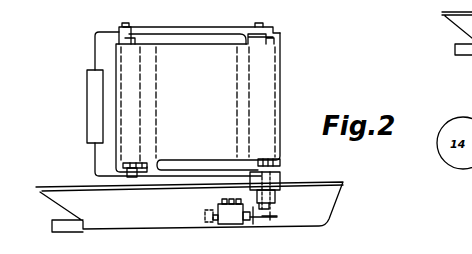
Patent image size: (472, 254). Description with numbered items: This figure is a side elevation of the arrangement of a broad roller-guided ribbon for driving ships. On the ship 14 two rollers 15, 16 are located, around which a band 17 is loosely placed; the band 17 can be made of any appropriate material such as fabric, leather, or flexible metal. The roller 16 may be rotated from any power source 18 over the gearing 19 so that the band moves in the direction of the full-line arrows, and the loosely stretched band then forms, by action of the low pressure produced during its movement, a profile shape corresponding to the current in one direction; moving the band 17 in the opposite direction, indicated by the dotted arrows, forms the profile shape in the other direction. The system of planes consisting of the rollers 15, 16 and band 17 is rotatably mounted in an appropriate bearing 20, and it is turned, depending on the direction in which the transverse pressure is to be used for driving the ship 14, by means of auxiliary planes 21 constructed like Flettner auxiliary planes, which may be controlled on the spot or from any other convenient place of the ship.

The ship 14 is at (138, 223).
The roller 15 is at (122, 166).
The roller 16 is at (281, 163).
The band 17 is at (181, 50).
The power source 18 is at (245, 214).
The gearing 19 is at (268, 218).
The bearing 20 is at (281, 176).
The auxiliary plane 21 is at (88, 109).